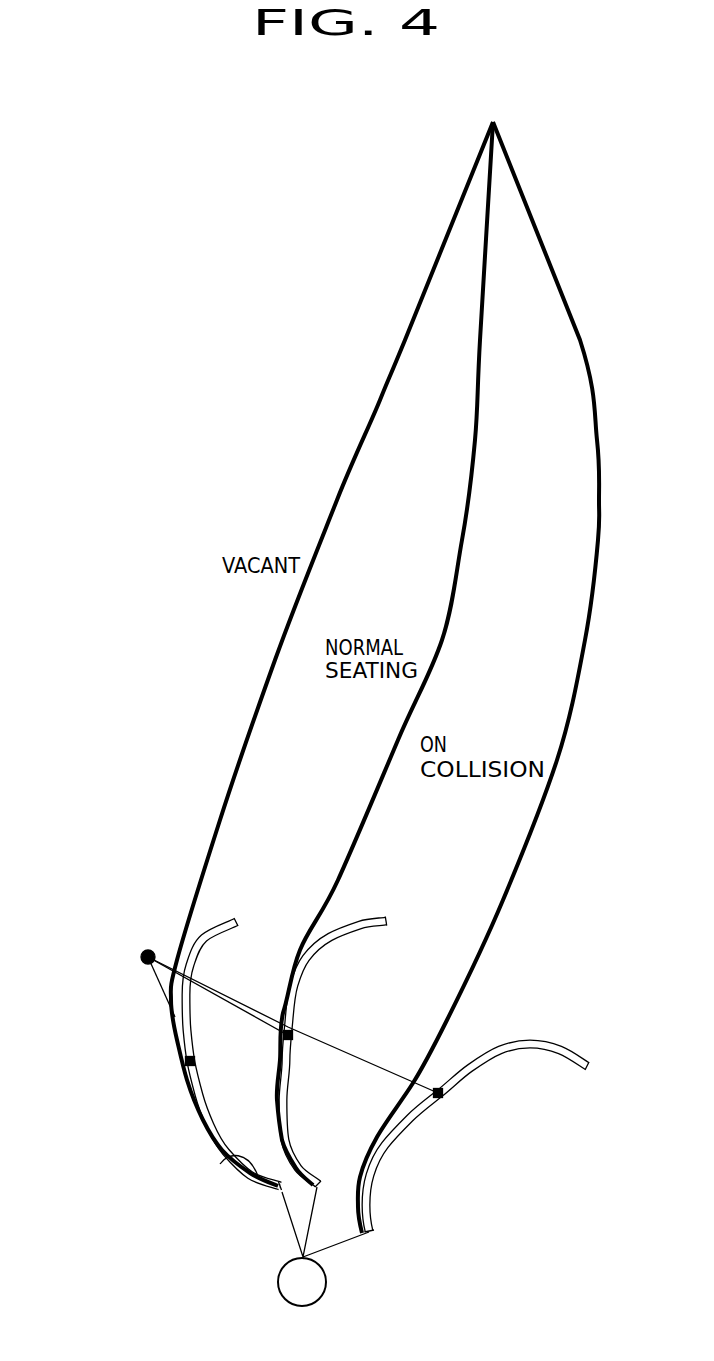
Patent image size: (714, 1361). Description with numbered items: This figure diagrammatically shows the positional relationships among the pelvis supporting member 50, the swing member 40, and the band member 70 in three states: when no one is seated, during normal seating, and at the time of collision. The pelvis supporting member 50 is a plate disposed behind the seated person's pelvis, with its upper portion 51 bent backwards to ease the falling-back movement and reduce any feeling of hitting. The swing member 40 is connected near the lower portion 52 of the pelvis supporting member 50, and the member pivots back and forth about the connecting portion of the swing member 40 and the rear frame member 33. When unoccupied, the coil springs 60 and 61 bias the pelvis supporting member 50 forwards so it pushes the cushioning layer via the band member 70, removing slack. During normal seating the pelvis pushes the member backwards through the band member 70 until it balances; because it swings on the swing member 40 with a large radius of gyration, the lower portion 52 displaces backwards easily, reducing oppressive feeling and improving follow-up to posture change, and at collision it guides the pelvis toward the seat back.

The rear frame member 33 is at (327, 1290).
The swing member 40 is at (287, 1222).
The pelvis supporting member 50 is at (212, 1074).
The upper portion 51 is at (202, 930).
The lower portion 52 is at (217, 1160).
The coil spring 60 is at (158, 990).
The coil spring 61 is at (155, 1010).
The band member 70 is at (337, 500).